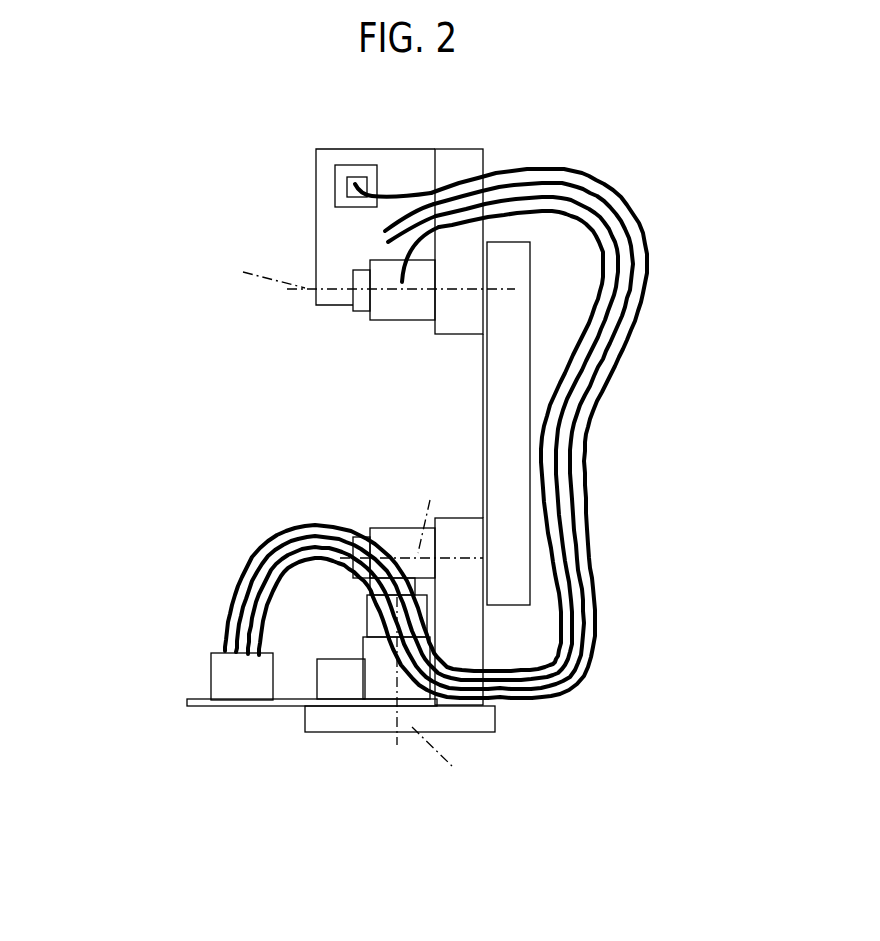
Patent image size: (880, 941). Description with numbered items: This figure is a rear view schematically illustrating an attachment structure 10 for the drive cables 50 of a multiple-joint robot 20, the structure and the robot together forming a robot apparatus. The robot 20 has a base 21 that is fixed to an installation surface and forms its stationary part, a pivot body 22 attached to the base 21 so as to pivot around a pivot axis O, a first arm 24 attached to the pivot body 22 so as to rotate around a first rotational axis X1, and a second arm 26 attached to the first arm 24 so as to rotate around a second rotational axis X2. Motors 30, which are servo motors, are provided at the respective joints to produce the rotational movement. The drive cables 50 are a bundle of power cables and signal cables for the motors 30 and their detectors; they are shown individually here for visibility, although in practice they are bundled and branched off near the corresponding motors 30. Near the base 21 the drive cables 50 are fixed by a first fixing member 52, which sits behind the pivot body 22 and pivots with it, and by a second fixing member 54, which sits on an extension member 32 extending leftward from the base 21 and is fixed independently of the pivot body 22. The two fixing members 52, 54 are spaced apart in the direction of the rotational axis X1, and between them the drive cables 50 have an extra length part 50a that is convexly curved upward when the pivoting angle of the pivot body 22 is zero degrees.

The attachment structure 10 is at (186, 530).
The robot 20 is at (287, 366).
The base 21 is at (495, 720).
The pivot body 22 is at (460, 518).
The first arm 24 is at (486, 418).
The second arm 26 is at (316, 245).
The motor 30 is at (335, 183).
The extension member 32 is at (187, 702).
The drive cables 50 is at (585, 332).
The extra length part 50a is at (298, 538).
The first fixing member 52 is at (380, 690).
The second fixing member 54 is at (210, 667).
The first rotational axis X1 is at (411, 505).
The second rotational axis X2 is at (358, 270).
The pivot axis O is at (435, 694).